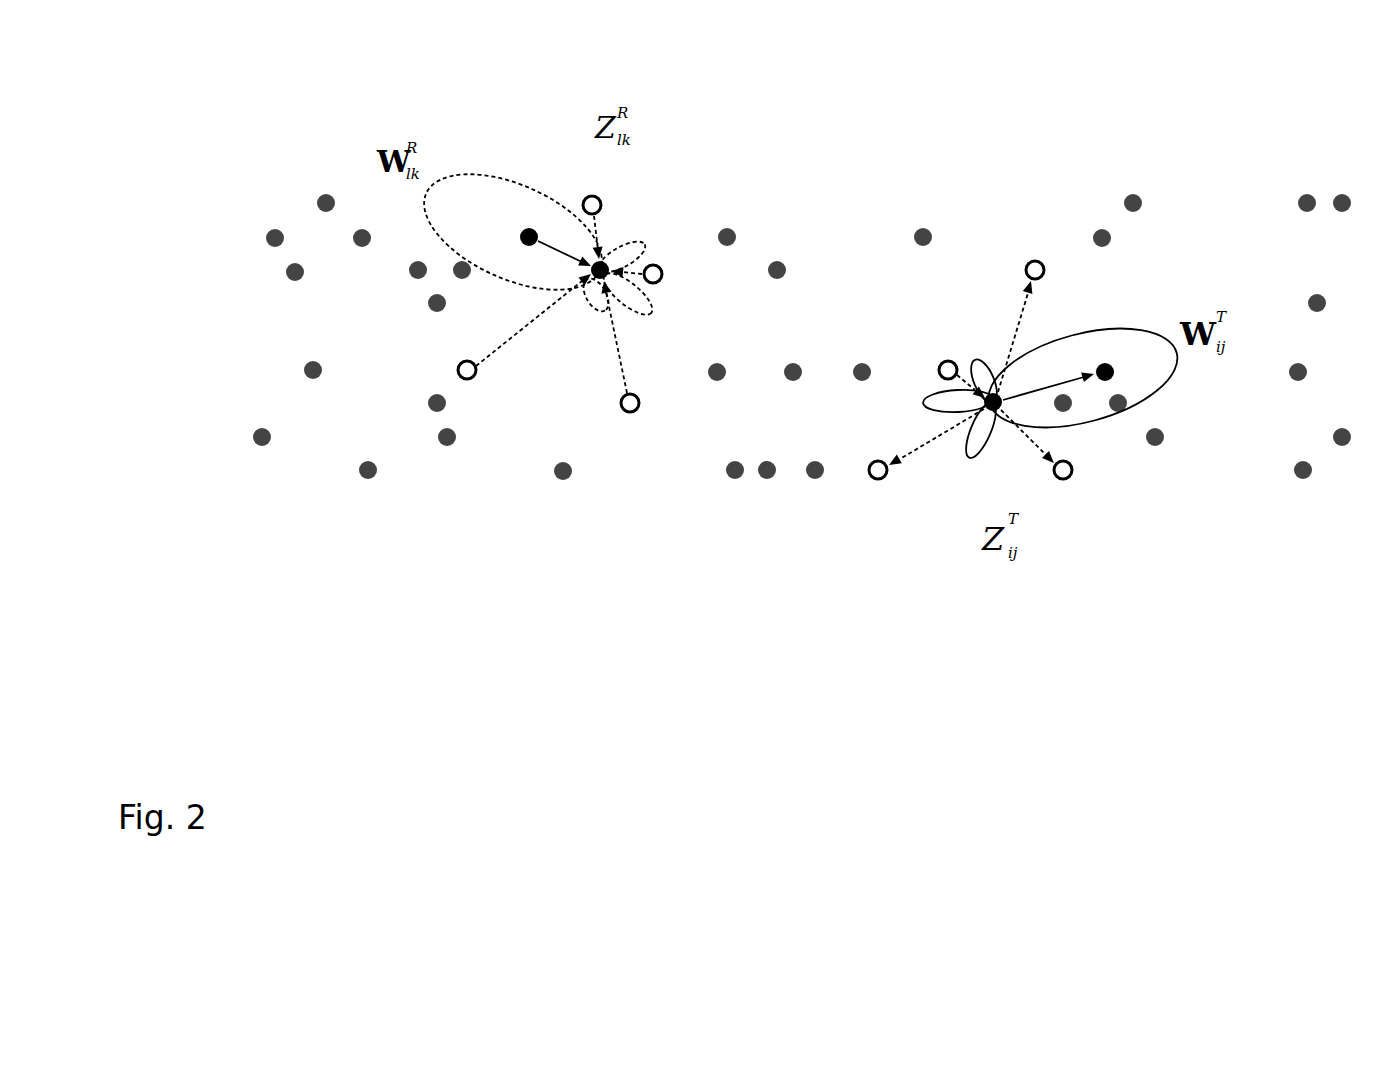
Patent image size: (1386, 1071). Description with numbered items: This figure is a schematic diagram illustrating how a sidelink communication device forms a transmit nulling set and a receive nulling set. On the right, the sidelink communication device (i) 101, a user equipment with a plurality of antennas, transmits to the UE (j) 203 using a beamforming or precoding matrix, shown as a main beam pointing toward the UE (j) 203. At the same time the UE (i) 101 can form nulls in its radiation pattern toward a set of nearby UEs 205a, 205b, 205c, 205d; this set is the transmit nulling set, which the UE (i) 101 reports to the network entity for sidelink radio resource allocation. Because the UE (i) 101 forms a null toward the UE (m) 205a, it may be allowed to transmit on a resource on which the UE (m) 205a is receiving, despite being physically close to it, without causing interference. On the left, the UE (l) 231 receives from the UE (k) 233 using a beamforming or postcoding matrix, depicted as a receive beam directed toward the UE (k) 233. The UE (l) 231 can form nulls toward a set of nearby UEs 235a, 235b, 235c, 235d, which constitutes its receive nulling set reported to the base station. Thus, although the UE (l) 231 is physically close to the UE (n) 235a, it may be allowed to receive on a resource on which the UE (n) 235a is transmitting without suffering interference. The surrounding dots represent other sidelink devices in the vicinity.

The sidelink communication device (i) 101 is at (984, 404).
The UE (j) 203 is at (1113, 365).
The UE (m) 205a is at (1045, 268).
The nearby UE 205b is at (868, 470).
The nearby UE 205c is at (1073, 472).
The nearby UE 205d is at (938, 371).
The UE (l) 231 is at (609, 268).
The UE (k) 233 is at (538, 237).
The UE (n) 235a is at (640, 403).
The nearby UE 235b is at (457, 371).
The nearby UE 235c is at (602, 204).
The nearby UE 235d is at (663, 274).